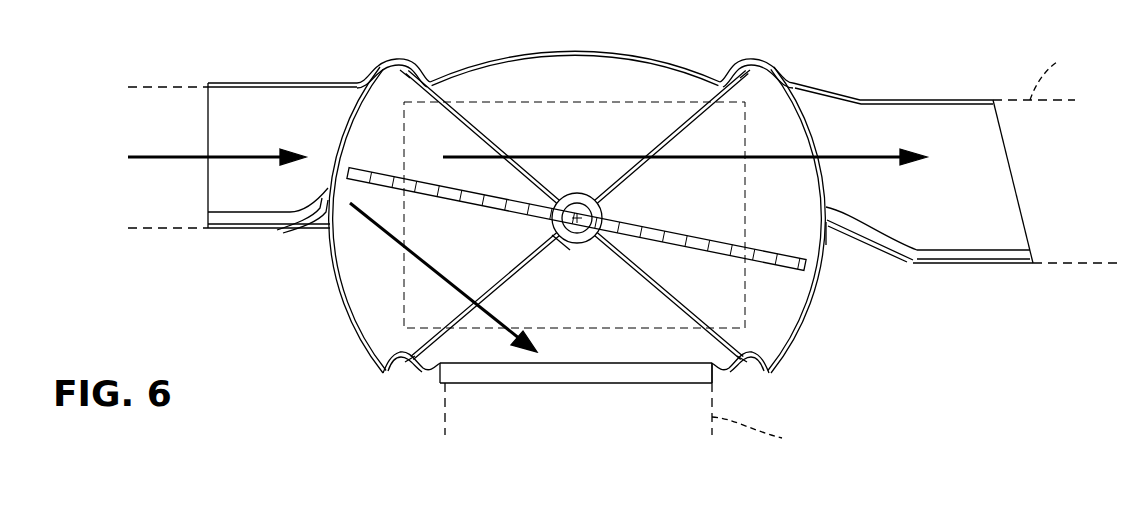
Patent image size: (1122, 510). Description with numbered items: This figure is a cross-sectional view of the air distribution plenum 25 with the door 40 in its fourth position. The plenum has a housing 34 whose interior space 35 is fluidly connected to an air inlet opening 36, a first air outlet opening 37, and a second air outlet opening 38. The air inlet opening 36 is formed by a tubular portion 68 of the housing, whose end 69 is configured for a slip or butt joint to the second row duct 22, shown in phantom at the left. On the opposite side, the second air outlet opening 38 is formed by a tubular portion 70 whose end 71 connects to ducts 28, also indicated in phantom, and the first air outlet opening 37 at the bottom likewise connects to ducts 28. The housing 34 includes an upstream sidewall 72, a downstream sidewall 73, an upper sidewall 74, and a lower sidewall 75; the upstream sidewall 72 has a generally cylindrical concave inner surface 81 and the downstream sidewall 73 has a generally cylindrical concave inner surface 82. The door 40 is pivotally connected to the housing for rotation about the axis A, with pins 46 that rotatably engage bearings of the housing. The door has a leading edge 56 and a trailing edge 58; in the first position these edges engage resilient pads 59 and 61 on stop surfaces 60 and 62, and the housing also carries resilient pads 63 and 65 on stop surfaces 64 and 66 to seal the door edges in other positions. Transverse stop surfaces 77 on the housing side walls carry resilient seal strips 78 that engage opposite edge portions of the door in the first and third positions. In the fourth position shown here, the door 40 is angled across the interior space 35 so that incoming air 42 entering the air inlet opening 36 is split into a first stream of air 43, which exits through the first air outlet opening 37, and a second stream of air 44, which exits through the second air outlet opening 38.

The second row duct 22 is at (170, 83).
The end of tubular portion 69 is at (208, 100).
The air inlet opening 36 is at (228, 131).
The tubular portion 68 is at (233, 232).
The leading edge 56 is at (320, 224).
The upstream sidewall 72 is at (330, 257).
The air 42 is at (187, 160).
The resilient pad or strip 63 is at (390, 62).
The stop surface 64 is at (378, 68).
The interior space 35 is at (538, 88).
The concave inner surface 81 is at (343, 295).
The downstream sidewall 73 is at (818, 287).
The concave inner surface 82 is at (808, 318).
The housing 34 is at (562, 50).
The upper sidewall 74 is at (595, 53).
The stop surface 62 is at (766, 66).
The resilient pad or strip 61 is at (775, 75).
The air distribution plenum 25 is at (861, 95).
The ducts 28 is at (782, 246).
The second air outlet opening 38 is at (970, 136).
The end of tubular portion 71 is at (1028, 222).
The tubular portion 70 is at (950, 268).
The trailing edge 58 is at (829, 242).
The second stream of air 44 is at (868, 163).
The first air outlet opening 37 is at (585, 345).
The resilient pad or strip 59 is at (385, 366).
The stop surface 60 is at (383, 382).
The resilient pad or strip 65 is at (788, 353).
The stop surface 66 is at (770, 362).
The lower sidewall 75 is at (723, 375).
The pins 46 is at (572, 250).
The transverse stop surfaces 77 is at (382, 130).
The resilient seal strips 78 is at (380, 113).
The door 40 is at (677, 223).
The axis A is at (610, 200).
The first stream of air 43 is at (383, 323).